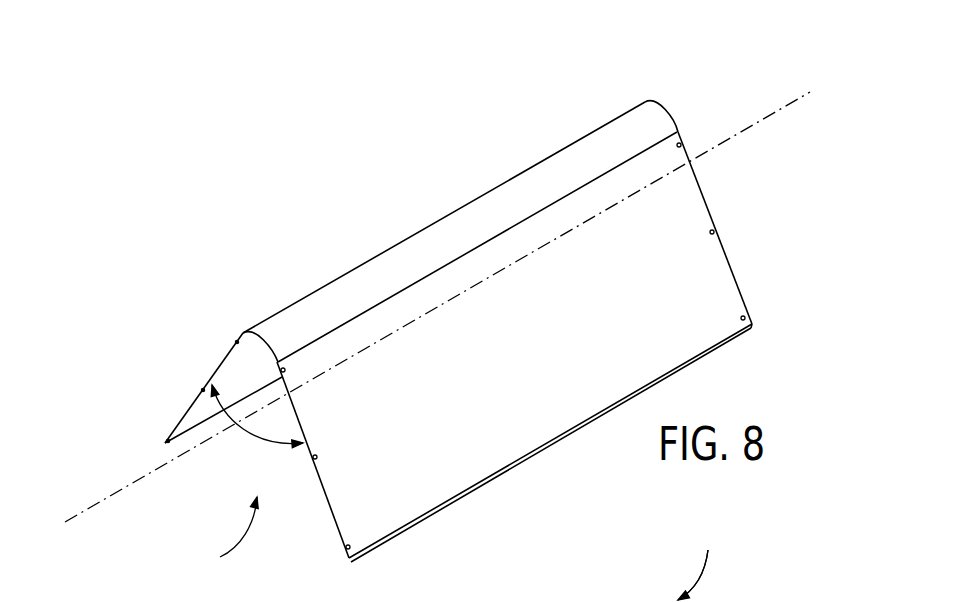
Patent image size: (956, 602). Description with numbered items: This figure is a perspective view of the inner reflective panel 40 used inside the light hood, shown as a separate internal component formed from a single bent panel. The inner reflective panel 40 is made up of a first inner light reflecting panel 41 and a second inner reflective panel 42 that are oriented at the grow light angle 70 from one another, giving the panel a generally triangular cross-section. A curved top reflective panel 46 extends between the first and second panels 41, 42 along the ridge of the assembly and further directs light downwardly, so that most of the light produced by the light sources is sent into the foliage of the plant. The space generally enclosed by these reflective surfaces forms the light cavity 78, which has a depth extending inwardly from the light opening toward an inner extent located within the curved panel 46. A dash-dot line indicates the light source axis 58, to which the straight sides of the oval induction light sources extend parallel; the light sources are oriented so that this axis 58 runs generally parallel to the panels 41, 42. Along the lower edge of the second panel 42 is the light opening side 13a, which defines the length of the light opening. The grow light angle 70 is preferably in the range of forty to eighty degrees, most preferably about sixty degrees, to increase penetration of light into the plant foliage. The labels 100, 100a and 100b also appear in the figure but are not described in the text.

The inner reflective panel 40 is at (695, 107).
The curved top reflective panel 46 is at (443, 232).
The light source axis 58 is at (747, 130).
The first inner light reflecting panel 41 is at (239, 360).
The grow light angle 70 is at (258, 440).
The light cavity 78 is at (223, 538).
The second inner reflective panel 42 is at (332, 517).
The light opening side 13a is at (535, 453).
The mounting surface 100a is at (714, 559).
The mounting surface 100b is at (714, 559).
The mounting structure 100 is at (488, 598).